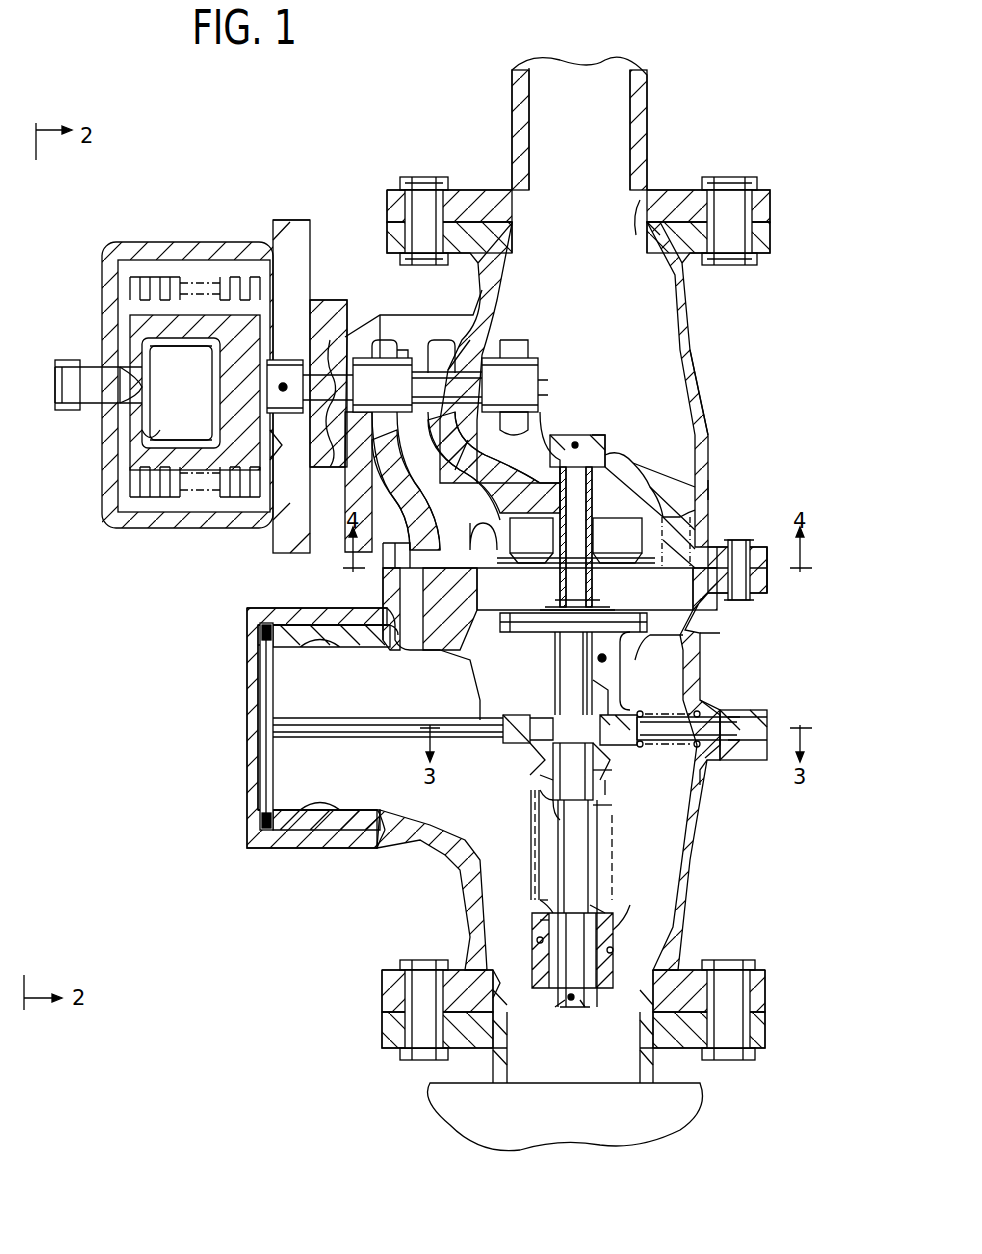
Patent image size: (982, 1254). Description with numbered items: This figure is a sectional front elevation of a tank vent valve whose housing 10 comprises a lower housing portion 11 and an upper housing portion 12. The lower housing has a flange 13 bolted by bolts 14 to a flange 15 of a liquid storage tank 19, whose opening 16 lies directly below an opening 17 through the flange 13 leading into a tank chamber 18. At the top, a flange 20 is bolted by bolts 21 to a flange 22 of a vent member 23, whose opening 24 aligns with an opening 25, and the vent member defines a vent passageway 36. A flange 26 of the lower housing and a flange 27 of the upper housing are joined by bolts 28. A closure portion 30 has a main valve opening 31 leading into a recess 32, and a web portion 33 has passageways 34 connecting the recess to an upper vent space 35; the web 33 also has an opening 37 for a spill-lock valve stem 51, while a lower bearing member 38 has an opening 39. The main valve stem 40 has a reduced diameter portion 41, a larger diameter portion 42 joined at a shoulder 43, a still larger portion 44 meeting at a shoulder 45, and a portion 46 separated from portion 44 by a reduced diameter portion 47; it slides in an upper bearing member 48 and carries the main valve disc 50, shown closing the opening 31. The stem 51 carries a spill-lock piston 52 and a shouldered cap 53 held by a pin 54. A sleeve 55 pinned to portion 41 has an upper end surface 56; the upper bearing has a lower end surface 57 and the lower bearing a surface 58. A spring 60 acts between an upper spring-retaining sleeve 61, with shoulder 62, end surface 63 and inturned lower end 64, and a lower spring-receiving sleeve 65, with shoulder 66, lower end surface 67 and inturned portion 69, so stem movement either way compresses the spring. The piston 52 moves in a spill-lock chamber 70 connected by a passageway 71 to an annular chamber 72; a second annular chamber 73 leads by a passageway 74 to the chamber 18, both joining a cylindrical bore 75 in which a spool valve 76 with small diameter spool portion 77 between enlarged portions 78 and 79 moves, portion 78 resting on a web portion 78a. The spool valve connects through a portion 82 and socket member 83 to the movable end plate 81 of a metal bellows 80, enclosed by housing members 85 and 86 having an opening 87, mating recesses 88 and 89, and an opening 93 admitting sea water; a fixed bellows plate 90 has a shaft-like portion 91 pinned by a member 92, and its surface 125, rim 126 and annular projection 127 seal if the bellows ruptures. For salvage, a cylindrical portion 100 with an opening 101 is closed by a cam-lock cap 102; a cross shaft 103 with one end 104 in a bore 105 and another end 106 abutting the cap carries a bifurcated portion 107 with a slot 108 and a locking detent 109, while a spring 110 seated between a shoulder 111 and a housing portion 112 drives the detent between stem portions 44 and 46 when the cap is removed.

The housing 10 is at (762, 485).
The lower housing portion 11 is at (692, 880).
The upper housing portion 12 is at (700, 390).
The flange 13 is at (683, 982).
The bolts 14 is at (416, 958).
The flange 15 is at (672, 1055).
The opening 16 is at (495, 1052).
The opening 17 is at (513, 1000).
The tank chamber 18 is at (440, 807).
The liquid storage tank 19 is at (609, 1136).
The flange 20 is at (772, 236).
The bolts 21 is at (418, 184).
The flange 22 is at (766, 216).
The vent member 23 is at (655, 186).
The opening 24 is at (640, 188).
The opening 25 is at (642, 238).
The flange 26 is at (760, 588).
The flange 27 is at (770, 556).
The bolts 28 is at (736, 546).
The closure portion 30 is at (492, 630).
The main valve opening 31 is at (522, 634).
The recess 32 is at (666, 596).
The web portion 33 is at (625, 472).
The passageways 34 is at (675, 535).
The upper vent space 35 is at (646, 396).
The vent passageway 36 is at (591, 154).
The opening 37 is at (608, 452).
The lower bearing member 38 is at (540, 957).
The opening 39 is at (586, 1005).
The main valve stem 40 is at (608, 656).
The reduced diameter portion 41 is at (592, 979).
The larger diameter portion 42 is at (590, 866).
The shoulder 43 is at (606, 906).
The still larger-diameter portion 44 is at (555, 762).
The shoulder 45 is at (560, 818).
The stem portion 46 is at (565, 668).
The reduced diameter portion 47 is at (520, 718).
The upper bearing member 48 is at (535, 778).
The main valve disc 50 is at (552, 606).
The spill-lock valve stem 51 is at (580, 514).
The spill-lock piston 52 is at (545, 550).
The shouldered cap 53 is at (556, 437).
The pin 54 is at (578, 440).
The sleeve 55 is at (522, 1014).
The upper end surface 56 is at (548, 908).
The lower end surface 57 is at (540, 789).
The surface 58 is at (540, 923).
The spring 60 is at (532, 858).
The upper spring-retaining sleeve 61 is at (615, 828).
The spring-receiving shoulder 62 is at (615, 790).
The end surface 63 is at (618, 775).
The inturned lower end 64 is at (615, 810).
The lower spring-receiving sleeve 65 is at (616, 936).
The spring-receiving shoulder 66 is at (535, 943).
The lower end surface 67 is at (613, 948).
The inturned portion 69 is at (538, 900).
The spill-lock chamber 70 is at (630, 544).
The passageway 71 is at (508, 506).
The annular chamber 72 is at (442, 352).
The annular chamber 73 is at (386, 348).
The passageway 74 is at (420, 552).
The cylindrical bore 75 is at (412, 355).
The spool valve 76 is at (541, 388).
The small diameter spool portion 77 is at (440, 382).
The enlarged diameter cylindrical portion 78 is at (521, 396).
The web portion 78a is at (520, 352).
The enlarged diameter cylindrical portion 79 is at (382, 392).
The metal bellows 80 is at (160, 300).
The movable end plate 81 is at (300, 470).
The portion 82 is at (332, 394).
The socket member 83 is at (273, 362).
The housing member 85 is at (214, 243).
The housing member 86 is at (282, 222).
The opening 87 is at (330, 340).
The recess 88 is at (168, 500).
The recess 89 is at (288, 288).
The fixed bellows plate 90 is at (148, 387).
The shaft-like portion 91 is at (112, 393).
The member 92 is at (65, 362).
The opening 93 is at (282, 555).
The cylindrical portion 100 is at (360, 850).
The opening 101 is at (282, 818).
The cam-lock cap 102 is at (258, 760).
The cross shaft 103 is at (388, 722).
The end 104 is at (718, 745).
The bore 105 is at (725, 718).
The end 106 is at (262, 700).
The bifurcated portion 107 is at (520, 742).
The slot 108 is at (610, 688).
The locking detent 109 is at (632, 700).
The spring 110 is at (702, 705).
The shoulder 111 is at (634, 716).
The portion 112 is at (703, 786).
The surface 125 is at (220, 402).
The rim 126 is at (212, 358).
The annular projection 127 is at (130, 437).